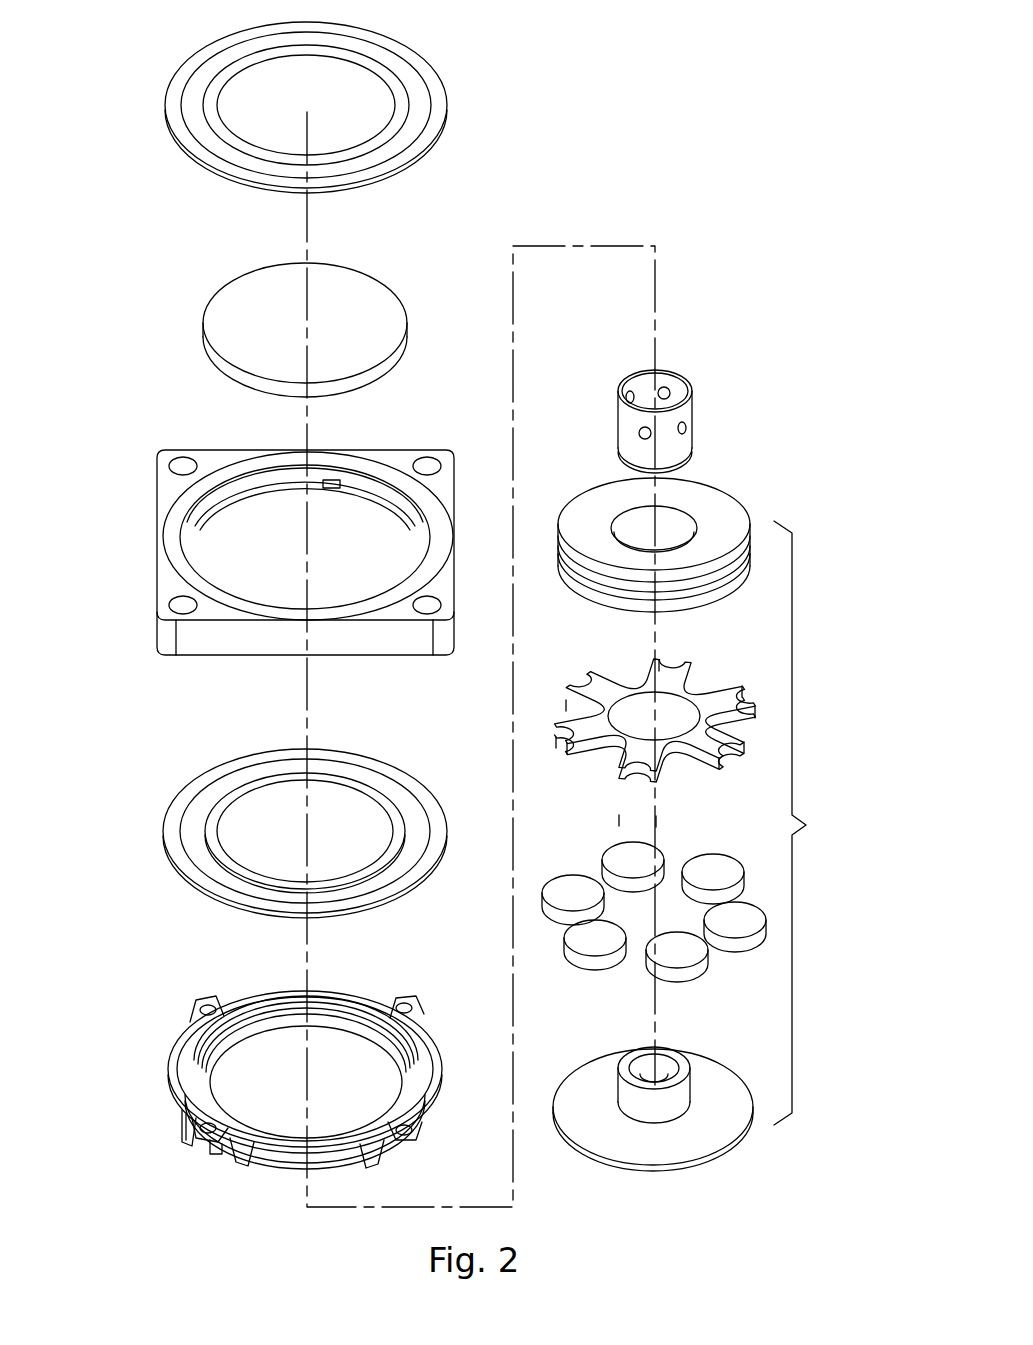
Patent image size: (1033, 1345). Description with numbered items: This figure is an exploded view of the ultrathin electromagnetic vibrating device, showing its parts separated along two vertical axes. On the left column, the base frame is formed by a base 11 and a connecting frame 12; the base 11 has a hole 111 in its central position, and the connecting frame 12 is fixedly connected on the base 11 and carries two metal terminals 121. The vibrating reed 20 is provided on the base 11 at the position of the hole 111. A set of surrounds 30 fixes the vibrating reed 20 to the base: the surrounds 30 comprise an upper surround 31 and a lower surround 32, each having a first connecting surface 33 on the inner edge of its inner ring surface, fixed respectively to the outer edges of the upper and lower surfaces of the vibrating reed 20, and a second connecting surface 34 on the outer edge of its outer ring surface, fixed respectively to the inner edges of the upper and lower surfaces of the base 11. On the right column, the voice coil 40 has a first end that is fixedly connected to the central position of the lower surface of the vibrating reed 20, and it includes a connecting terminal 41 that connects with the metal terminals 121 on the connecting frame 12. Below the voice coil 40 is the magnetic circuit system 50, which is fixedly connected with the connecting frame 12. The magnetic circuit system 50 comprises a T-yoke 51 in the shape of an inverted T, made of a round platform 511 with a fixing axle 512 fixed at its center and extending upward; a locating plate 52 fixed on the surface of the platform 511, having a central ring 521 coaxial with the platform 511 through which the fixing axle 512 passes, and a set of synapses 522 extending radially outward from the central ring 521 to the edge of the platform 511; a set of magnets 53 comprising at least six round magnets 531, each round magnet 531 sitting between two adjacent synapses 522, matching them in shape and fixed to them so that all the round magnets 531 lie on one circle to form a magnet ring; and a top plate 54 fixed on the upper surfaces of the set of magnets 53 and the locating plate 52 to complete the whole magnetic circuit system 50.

The base 11 is at (307, 522).
The hole 111 is at (270, 535).
The connecting frame 12 is at (296, 1080).
The metal terminals 121 is at (190, 1122).
The vibrating reed 20 is at (365, 300).
The surrounds 30 is at (292, 104).
The upper surround 31 is at (400, 68).
The lower surround 32 is at (380, 785).
The first connecting surface 33 is at (395, 108).
The second connecting surface 34 is at (425, 130).
The voice coil 40 is at (647, 408).
The connecting terminal 41 is at (620, 435).
The magnetic circuit system 50 is at (805, 823).
The T-yoke 51 is at (655, 1079).
The round platform 511 is at (610, 1062).
The fixing axle 512 is at (683, 1098).
The locating plate 52 is at (645, 714).
The central ring 521 is at (690, 700).
The synapses 522 is at (595, 680).
The set of magnets 53 is at (653, 884).
The round magnet 531 is at (630, 860).
The top plate 54 is at (700, 500).